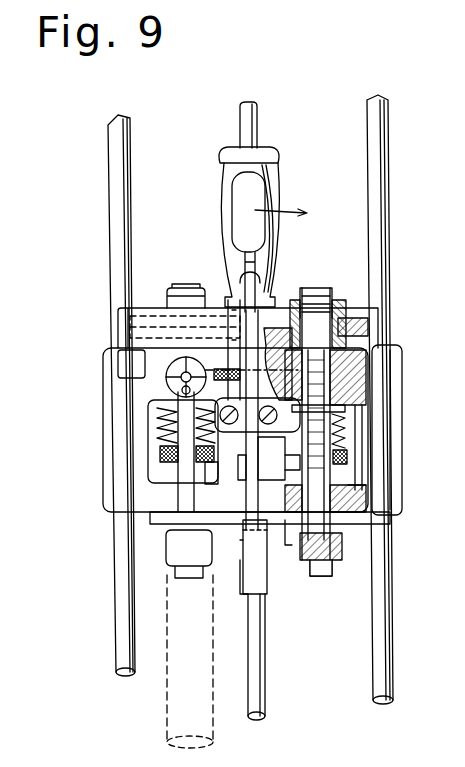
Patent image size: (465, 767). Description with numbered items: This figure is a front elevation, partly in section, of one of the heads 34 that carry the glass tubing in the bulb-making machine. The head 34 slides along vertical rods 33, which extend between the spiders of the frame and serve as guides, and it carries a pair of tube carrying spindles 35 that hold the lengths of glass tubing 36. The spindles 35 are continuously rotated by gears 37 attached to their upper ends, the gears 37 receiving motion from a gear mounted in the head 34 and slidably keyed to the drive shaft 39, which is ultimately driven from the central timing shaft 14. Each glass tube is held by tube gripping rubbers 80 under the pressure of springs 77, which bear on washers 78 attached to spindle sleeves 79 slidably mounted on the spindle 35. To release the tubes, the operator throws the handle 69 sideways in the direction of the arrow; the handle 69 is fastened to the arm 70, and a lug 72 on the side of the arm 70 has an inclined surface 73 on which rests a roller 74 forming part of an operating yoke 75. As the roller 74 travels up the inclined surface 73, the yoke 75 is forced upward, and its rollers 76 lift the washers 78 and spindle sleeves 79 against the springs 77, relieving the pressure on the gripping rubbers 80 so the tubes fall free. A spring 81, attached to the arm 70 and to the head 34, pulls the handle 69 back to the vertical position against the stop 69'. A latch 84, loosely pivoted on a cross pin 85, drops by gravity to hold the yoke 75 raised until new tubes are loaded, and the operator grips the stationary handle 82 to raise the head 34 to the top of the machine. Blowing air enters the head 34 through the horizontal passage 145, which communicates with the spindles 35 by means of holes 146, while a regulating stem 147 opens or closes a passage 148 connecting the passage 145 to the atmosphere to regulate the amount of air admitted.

The central timing shaft 14 is at (459, 430).
The vertical rods 33 is at (109, 160).
The head 34 is at (101, 378).
The tube carrying spindle 35 is at (182, 530).
The glass tubing 36 is at (175, 695).
The gear 37 is at (149, 318).
The drive shaft 39 is at (238, 119).
The handle 69 is at (272, 206).
The stop 69' is at (255, 400).
The arm 70 is at (256, 268).
The lug 72 is at (322, 432).
The inclined surface 73 is at (252, 468).
The roller 74 is at (216, 470).
The operating yoke 75 is at (286, 548).
The rollers 76 is at (300, 474).
The springs 77 is at (165, 425).
The washers 78 is at (165, 452).
The spindle sleeves 79 is at (376, 491).
The tube gripping rubbers 80 is at (168, 562).
The spring 81 is at (222, 372).
The stationary handle 82 is at (277, 152).
The latch 84 is at (250, 590).
The cross pin 85 is at (270, 578).
The horizontal passage 145 is at (262, 345).
The holes 146 is at (392, 352).
The regulating stem 147 is at (166, 378).
The passage 148 is at (176, 392).